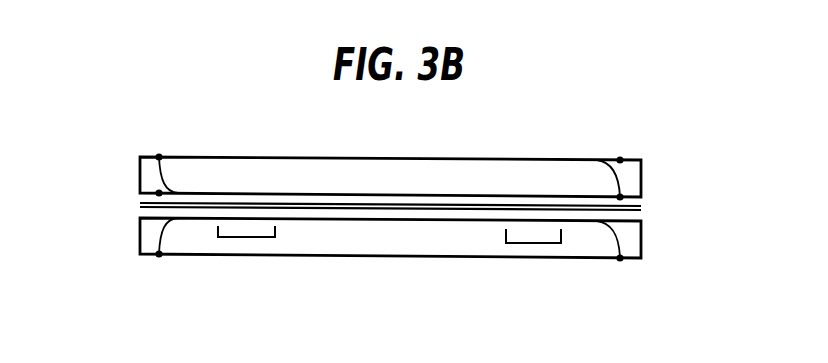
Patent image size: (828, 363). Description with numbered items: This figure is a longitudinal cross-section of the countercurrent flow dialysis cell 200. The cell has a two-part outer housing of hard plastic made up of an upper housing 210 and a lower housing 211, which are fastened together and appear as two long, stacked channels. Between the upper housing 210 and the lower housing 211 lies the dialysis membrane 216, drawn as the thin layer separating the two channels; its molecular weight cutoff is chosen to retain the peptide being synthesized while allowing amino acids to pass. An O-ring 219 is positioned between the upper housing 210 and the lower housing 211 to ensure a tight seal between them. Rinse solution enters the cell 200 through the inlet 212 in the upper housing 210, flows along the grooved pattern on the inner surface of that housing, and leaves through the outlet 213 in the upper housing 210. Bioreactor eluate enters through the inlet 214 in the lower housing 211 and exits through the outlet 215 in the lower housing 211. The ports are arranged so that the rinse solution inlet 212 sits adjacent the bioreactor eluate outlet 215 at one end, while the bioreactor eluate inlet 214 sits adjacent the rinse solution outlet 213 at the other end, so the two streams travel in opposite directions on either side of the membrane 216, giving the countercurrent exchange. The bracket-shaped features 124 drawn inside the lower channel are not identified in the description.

The countercurrent flow dialysis cell 200 is at (137, 139).
The upper housing 210 is at (499, 159).
The lower housing 211 is at (340, 256).
The inlet 212 is at (159, 157).
The outlet 213 is at (620, 160).
The inlet 214 is at (620, 258).
The outlet 215 is at (159, 254).
The dialysis membrane 216 is at (411, 207).
The O-ring 219 is at (159, 193).
The electrodes 124 is at (243, 237).